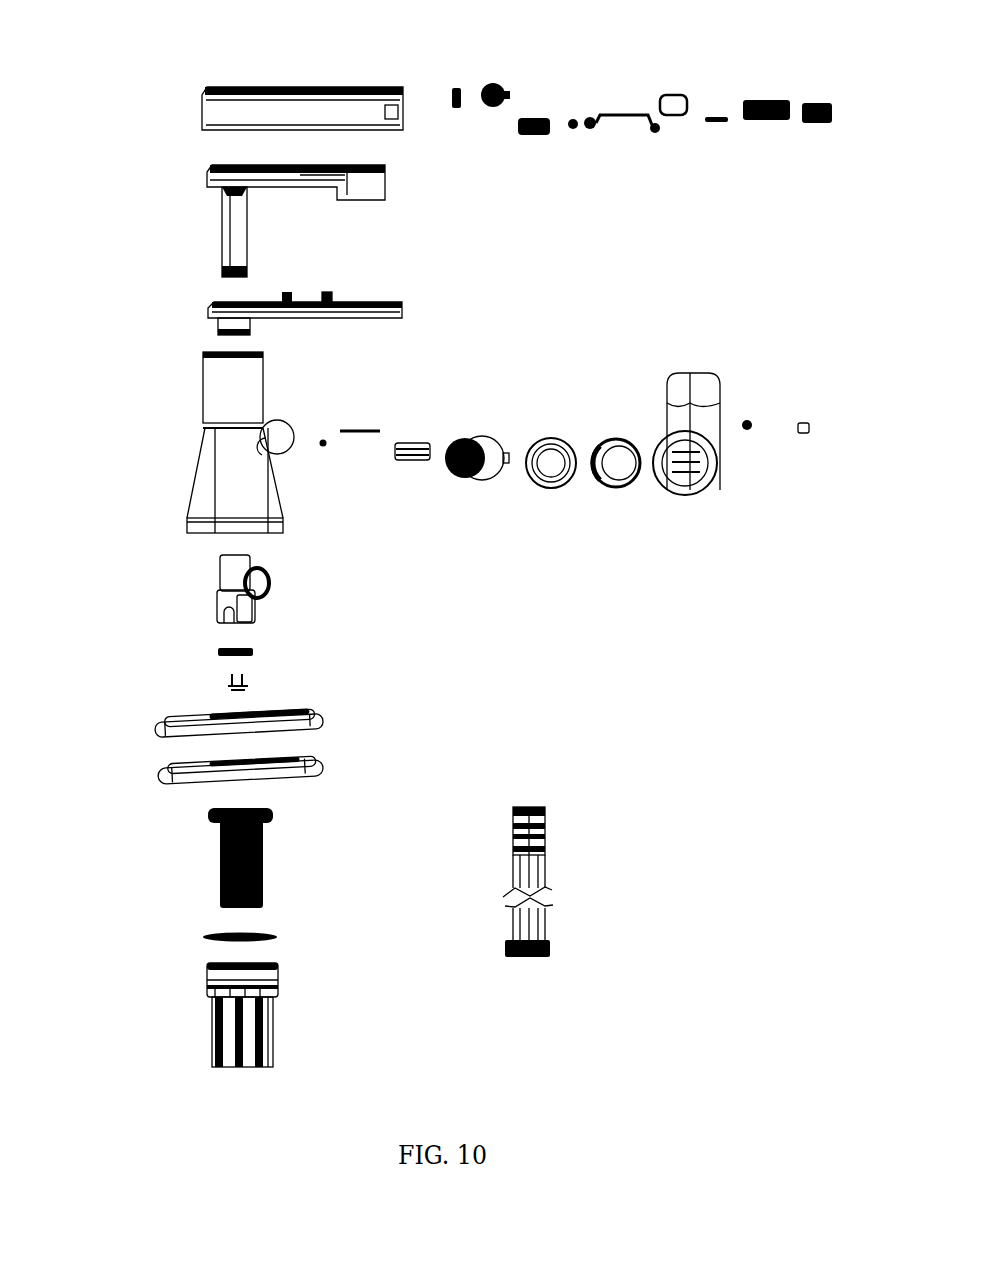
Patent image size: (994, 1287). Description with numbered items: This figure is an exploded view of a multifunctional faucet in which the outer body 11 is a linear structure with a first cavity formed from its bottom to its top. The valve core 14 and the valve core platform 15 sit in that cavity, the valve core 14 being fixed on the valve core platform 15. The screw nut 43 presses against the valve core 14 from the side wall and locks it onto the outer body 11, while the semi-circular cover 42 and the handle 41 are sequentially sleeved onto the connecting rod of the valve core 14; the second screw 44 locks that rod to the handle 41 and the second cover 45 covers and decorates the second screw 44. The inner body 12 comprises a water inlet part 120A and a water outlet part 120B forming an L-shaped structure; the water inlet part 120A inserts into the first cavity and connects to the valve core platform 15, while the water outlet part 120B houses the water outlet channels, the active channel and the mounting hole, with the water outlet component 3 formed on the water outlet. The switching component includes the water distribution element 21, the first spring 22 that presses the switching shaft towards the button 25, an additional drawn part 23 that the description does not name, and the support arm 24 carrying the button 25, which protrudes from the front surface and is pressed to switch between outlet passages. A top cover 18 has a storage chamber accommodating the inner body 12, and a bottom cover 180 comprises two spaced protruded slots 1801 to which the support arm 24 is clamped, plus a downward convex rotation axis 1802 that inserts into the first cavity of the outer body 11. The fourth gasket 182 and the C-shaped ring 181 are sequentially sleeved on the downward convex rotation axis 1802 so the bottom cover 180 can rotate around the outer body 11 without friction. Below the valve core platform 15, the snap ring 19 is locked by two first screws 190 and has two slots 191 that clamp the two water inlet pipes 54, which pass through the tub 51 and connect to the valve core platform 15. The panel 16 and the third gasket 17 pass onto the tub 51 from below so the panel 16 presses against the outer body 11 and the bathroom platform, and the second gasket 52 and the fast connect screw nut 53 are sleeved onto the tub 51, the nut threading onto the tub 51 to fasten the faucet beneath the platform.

The top cover 18 is at (212, 113).
The inner body 12 is at (205, 171).
The water inlet part 120A is at (230, 213).
The water outlet part 120B is at (302, 182).
The bottom cover 180 is at (212, 303).
The downward convex rotation axis 1802 is at (222, 330).
The protruded slots 1801 is at (325, 298).
The outer body 11 is at (215, 435).
The fourth gasket 182 is at (363, 435).
The C-shaped ring 181 is at (400, 461).
The valve core 14 is at (472, 482).
The screw nut 43 is at (551, 490).
The semi-circular cover 42 is at (616, 488).
The handle 41 is at (683, 495).
The second screw 44 is at (745, 432).
The second cover 45 is at (803, 433).
The first spring 22 is at (455, 108).
The water distribution element 21 is at (485, 108).
The nut 23 is at (537, 135).
The support arm 24 is at (615, 125).
The button 25 is at (670, 115).
The water outlet component 3 is at (785, 135).
The valve core platform 15 is at (220, 563).
The snap ring 19 is at (222, 650).
The slots 191 is at (247, 660).
The first screws 190 is at (227, 678).
The panel 16 is at (190, 725).
The third gasket 17 is at (183, 770).
The tub 51 is at (215, 852).
The second gasket 52 is at (215, 930).
The fast connect screw nut 53 is at (212, 1005).
The water inlet pipes 54 is at (508, 913).